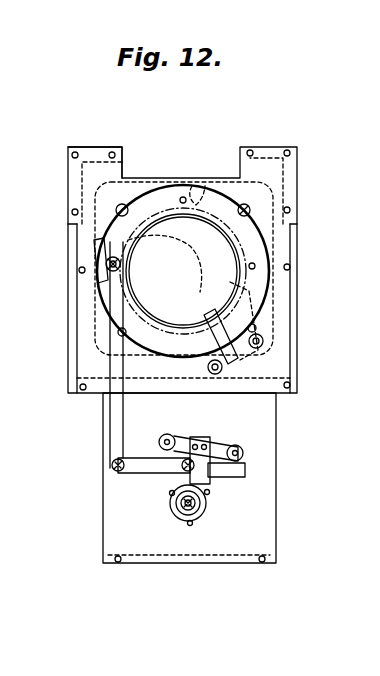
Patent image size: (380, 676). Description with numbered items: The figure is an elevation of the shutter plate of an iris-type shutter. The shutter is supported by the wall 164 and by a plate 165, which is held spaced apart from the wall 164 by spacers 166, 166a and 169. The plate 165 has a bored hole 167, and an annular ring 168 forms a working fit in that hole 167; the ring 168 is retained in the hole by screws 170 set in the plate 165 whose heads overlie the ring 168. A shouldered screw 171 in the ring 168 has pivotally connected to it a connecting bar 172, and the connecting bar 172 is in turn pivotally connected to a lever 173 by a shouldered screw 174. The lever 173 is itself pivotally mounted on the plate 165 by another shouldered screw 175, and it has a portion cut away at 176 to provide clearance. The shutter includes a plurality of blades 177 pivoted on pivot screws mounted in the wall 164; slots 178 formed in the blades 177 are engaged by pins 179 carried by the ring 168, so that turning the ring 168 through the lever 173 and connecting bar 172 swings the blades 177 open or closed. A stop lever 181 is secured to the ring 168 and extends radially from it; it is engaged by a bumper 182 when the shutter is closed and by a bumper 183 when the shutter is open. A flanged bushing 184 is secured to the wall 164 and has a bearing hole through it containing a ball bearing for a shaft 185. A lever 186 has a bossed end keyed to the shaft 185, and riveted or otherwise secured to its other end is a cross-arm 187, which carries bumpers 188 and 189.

The wall 164 is at (277, 450).
The plate 165 is at (290, 345).
The spacer 166 is at (282, 175).
The spacer 166a is at (77, 172).
The bored hole 167 is at (268, 242).
The annular ring 168 is at (262, 259).
The spacer 169 is at (282, 393).
The screws 170 is at (124, 206).
The shouldered screw 171 is at (100, 264).
The connecting bar 172 is at (110, 320).
The lever 173 is at (155, 472).
The shouldered screw 174 is at (114, 468).
The shouldered screw 175 is at (168, 491).
The cut-away portion 176 is at (142, 461).
The blades 177 is at (124, 198).
The slots 178 is at (198, 196).
The pins 179 is at (192, 190).
The stop lever 181 is at (224, 368).
The bumper 182 is at (264, 340).
The bumper 183 is at (208, 368).
The flanged bushing 184 is at (174, 512).
The shaft 185 is at (200, 506).
The lever 186 is at (212, 484).
The cross-arm 187 is at (211, 440).
The bumper 188 is at (174, 438).
The bumper 189 is at (240, 447).